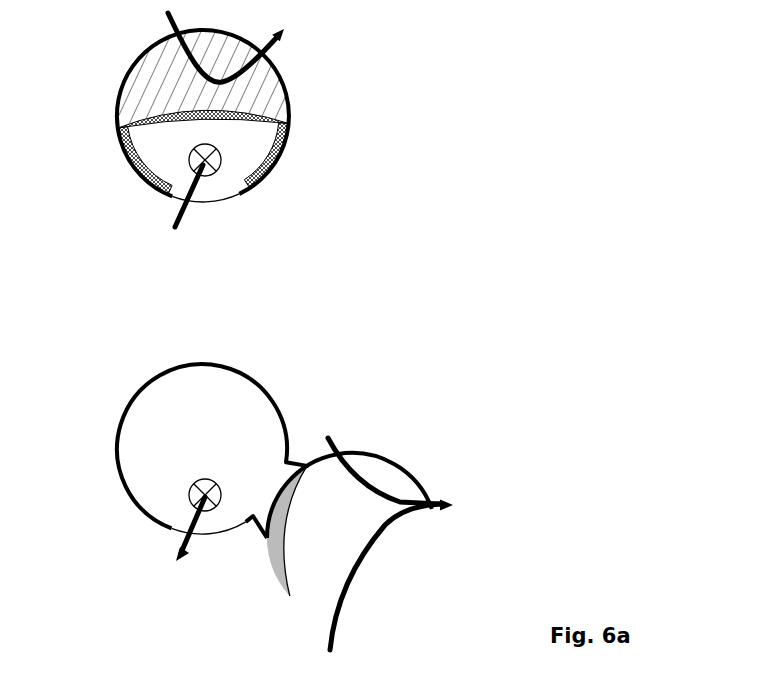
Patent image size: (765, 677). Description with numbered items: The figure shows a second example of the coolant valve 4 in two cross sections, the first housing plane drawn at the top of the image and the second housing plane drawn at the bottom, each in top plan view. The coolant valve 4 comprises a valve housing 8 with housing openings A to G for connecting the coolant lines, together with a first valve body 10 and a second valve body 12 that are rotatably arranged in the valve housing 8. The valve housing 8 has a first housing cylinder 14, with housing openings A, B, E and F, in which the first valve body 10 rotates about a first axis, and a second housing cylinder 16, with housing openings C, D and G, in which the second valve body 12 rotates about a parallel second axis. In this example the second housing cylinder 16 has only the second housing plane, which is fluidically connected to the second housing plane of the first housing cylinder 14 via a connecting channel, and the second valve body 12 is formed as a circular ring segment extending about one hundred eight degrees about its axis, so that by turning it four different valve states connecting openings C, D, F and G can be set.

The coolant valve 4 is at (497, 32).
The valve housing 8 is at (468, 78).
The first valve body 10 is at (291, 141).
The second valve body 12 is at (288, 578).
The first housing cylinder 14 is at (253, 378).
The second housing cylinder 16 is at (438, 550).